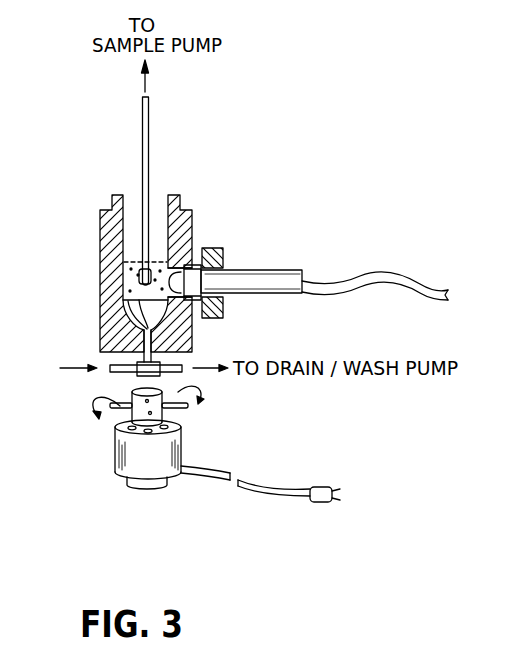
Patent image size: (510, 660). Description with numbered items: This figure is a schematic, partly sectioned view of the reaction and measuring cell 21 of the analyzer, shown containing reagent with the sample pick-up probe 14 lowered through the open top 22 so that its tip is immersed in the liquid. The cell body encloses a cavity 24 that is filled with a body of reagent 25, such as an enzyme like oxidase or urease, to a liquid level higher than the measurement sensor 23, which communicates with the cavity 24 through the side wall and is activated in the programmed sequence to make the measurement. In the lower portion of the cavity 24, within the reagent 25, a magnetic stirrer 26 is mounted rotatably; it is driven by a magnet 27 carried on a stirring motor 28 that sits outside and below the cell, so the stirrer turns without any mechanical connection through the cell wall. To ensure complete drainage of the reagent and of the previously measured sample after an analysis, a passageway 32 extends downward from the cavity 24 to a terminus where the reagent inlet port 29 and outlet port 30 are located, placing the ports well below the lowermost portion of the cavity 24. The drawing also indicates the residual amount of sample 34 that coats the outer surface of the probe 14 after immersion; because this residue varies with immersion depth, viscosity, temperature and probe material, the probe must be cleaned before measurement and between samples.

The probe 14 is at (150, 130).
The reaction and measuring cell 21 is at (193, 228).
The open top 22 is at (166, 196).
The measurement sensor 23 is at (258, 270).
The cavity 24 is at (132, 210).
The reagent 25 is at (128, 292).
The magnetic stirrer 26 is at (124, 318).
The magnet 27 is at (92, 400).
The stirring motor 28 is at (115, 455).
The inlet port 29 is at (110, 372).
The outlet port 30 is at (183, 373).
The passageway 32 is at (153, 357).
The residual amount of sample 34 is at (136, 278).